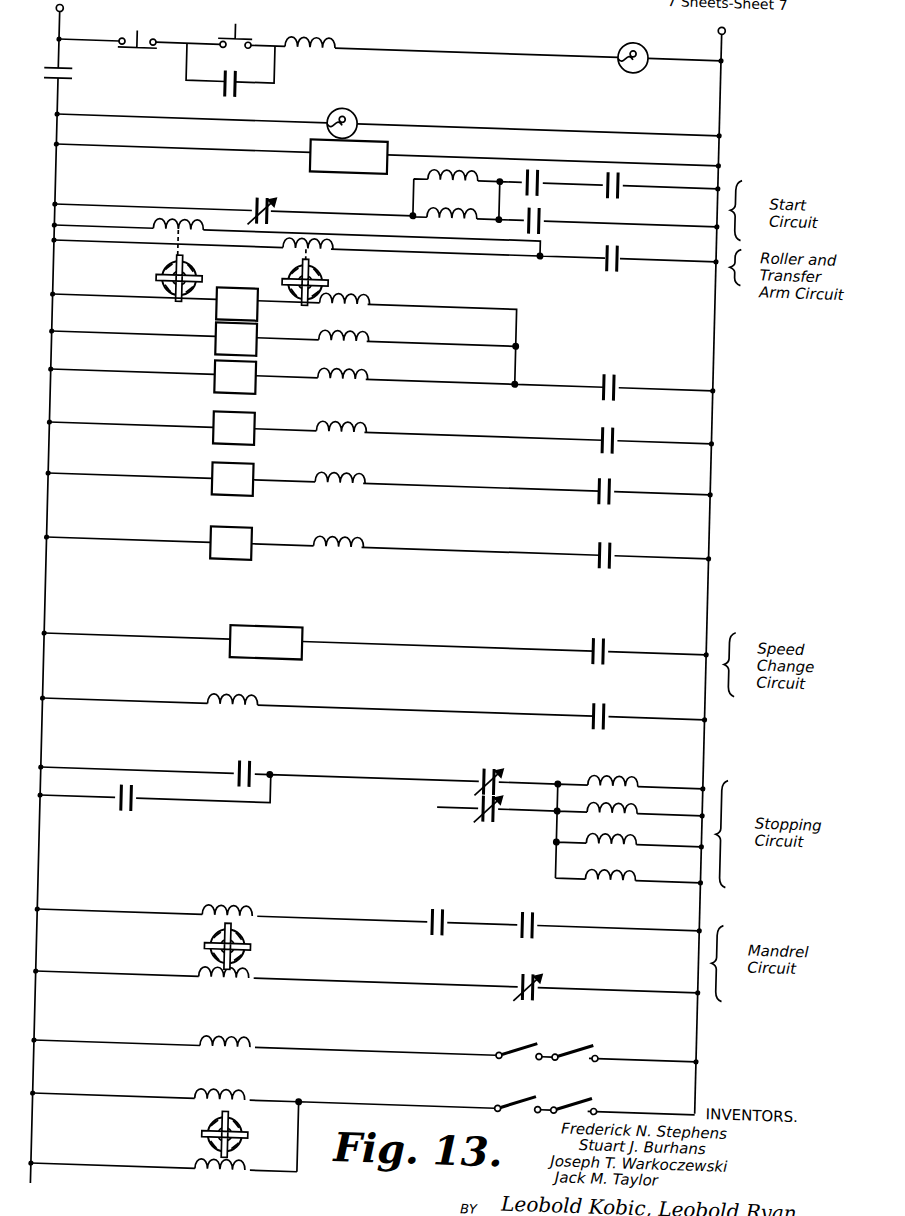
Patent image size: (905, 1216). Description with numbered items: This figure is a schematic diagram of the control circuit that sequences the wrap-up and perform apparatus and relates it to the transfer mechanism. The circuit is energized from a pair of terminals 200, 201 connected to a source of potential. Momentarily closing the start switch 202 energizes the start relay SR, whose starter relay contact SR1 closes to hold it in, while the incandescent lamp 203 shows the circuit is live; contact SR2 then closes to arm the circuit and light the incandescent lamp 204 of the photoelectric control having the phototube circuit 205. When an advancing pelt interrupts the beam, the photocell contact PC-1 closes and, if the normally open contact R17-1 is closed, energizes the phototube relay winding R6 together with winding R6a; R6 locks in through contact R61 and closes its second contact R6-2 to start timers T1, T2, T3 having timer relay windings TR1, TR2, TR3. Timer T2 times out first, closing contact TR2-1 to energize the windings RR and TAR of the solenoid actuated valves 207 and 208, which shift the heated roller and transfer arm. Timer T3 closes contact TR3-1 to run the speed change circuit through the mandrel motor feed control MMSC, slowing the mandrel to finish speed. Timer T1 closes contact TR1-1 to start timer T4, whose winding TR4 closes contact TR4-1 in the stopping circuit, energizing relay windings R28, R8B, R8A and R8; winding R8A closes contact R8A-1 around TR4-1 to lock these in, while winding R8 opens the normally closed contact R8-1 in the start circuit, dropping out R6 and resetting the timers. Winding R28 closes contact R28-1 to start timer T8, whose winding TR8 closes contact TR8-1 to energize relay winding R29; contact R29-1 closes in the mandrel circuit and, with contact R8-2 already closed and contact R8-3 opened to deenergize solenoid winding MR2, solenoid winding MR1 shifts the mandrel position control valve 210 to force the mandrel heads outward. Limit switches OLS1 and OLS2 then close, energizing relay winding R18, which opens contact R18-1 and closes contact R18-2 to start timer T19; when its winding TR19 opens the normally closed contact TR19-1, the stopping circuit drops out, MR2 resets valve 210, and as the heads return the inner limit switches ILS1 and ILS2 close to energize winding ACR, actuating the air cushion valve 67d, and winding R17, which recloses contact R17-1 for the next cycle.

The terminal 200 is at (63, 9).
The terminal 201 is at (724, 12).
The start switch 202 is at (240, 36).
The incandescent lamp 203 is at (645, 30).
The incandescent lamp 204 is at (356, 106).
The phototube circuit 205 is at (390, 136).
The solenoid actuated valve 207 is at (166, 273).
The solenoid actuated valve 208 is at (330, 272).
The mandrel position control valve 210 is at (270, 942).
The air cushion valve 67d is at (272, 1134).
The start relay SR is at (330, 31).
The starter relay contact SR1 is at (237, 90).
The start relay contact SR2 is at (76, 69).
The relay winding R6A R6a is at (470, 154).
The phototube relay winding R6 is at (470, 196).
The normally open relay contact R17-1 is at (542, 160).
The photocell contact PC-1 is at (622, 172).
The locking contact R61 is at (545, 210).
The solenoid winding RR is at (205, 215).
The normally closed contact R8-1 is at (270, 192).
The solenoid winding TAR is at (285, 238).
The timer relay contact TR2-1 is at (631, 227).
The timer T1 is at (237, 303).
The timer T2 is at (236, 338).
The timer T3 is at (235, 376).
The timer T4 is at (234, 427).
The timer T19 is at (233, 478).
The timer T8 is at (231, 542).
The timer relay winding TR1 is at (380, 290).
The timer relay winding TR2 is at (378, 326).
The timer relay winding TR3 is at (378, 364).
The timer relay winding TR4 is at (378, 418).
The timer relay winding TR19 is at (378, 470).
The timer relay winding TR8 is at (378, 533).
The relay contact R6-2 is at (623, 365).
The timer relay contact TR1-1 is at (623, 418).
The relay contact R18-2 is at (621, 470).
The relay contact R28-1 is at (623, 534).
The mandrel motor feed control MMSC is at (266, 642).
The timer relay contact TR3-1 is at (619, 630).
The relay winding R29 is at (272, 697).
The timer relay contact TR8-1 is at (621, 695).
The timer relay contact TR4-1 is at (270, 762).
The relay contact R8A-1 is at (152, 797).
The normally closed contact TR19-1 is at (516, 762).
The relay contact R18-1 is at (516, 794).
The relay winding R28 is at (650, 764).
The relay winding R8A is at (650, 791).
The relay winding R8B is at (650, 823).
The relay winding R8 is at (650, 859).
The solenoid winding MR1 is at (272, 906).
The solenoid winding MR2 is at (262, 975).
The relay contact R29-1 is at (463, 921).
The relay contact R8-2 is at (556, 904).
The relay contact R8-3 is at (558, 967).
The relay winding R18 is at (268, 1036).
The limit switch OLS1 is at (540, 1033).
The limit switch OLS2 is at (594, 1033).
The winding ACR is at (270, 1088).
The inner limit switch ILS1 is at (540, 1086).
The inner limit switch ILS2 is at (594, 1086).
The winding R17 is at (262, 1170).